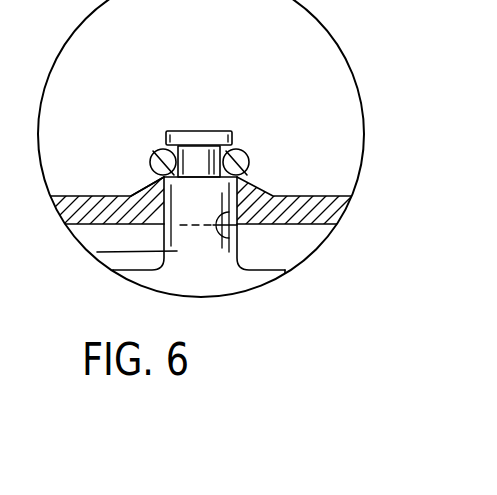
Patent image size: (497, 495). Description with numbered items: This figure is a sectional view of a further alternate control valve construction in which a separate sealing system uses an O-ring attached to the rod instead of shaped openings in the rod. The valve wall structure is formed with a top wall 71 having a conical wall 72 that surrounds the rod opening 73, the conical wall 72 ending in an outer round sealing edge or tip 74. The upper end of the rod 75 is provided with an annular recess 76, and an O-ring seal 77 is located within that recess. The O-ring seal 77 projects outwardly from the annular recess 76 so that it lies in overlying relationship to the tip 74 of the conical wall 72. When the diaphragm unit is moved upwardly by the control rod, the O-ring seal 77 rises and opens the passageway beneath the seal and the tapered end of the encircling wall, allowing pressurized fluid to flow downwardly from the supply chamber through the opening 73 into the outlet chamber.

The top wall 71 is at (305, 198).
The conical wall 72 is at (147, 192).
The rod opening 73 is at (228, 249).
The sealing edge or tip 74 is at (240, 150).
The rod 75 is at (97, 252).
The annular recess 76 is at (201, 155).
The O-ring seal 77 is at (160, 150).